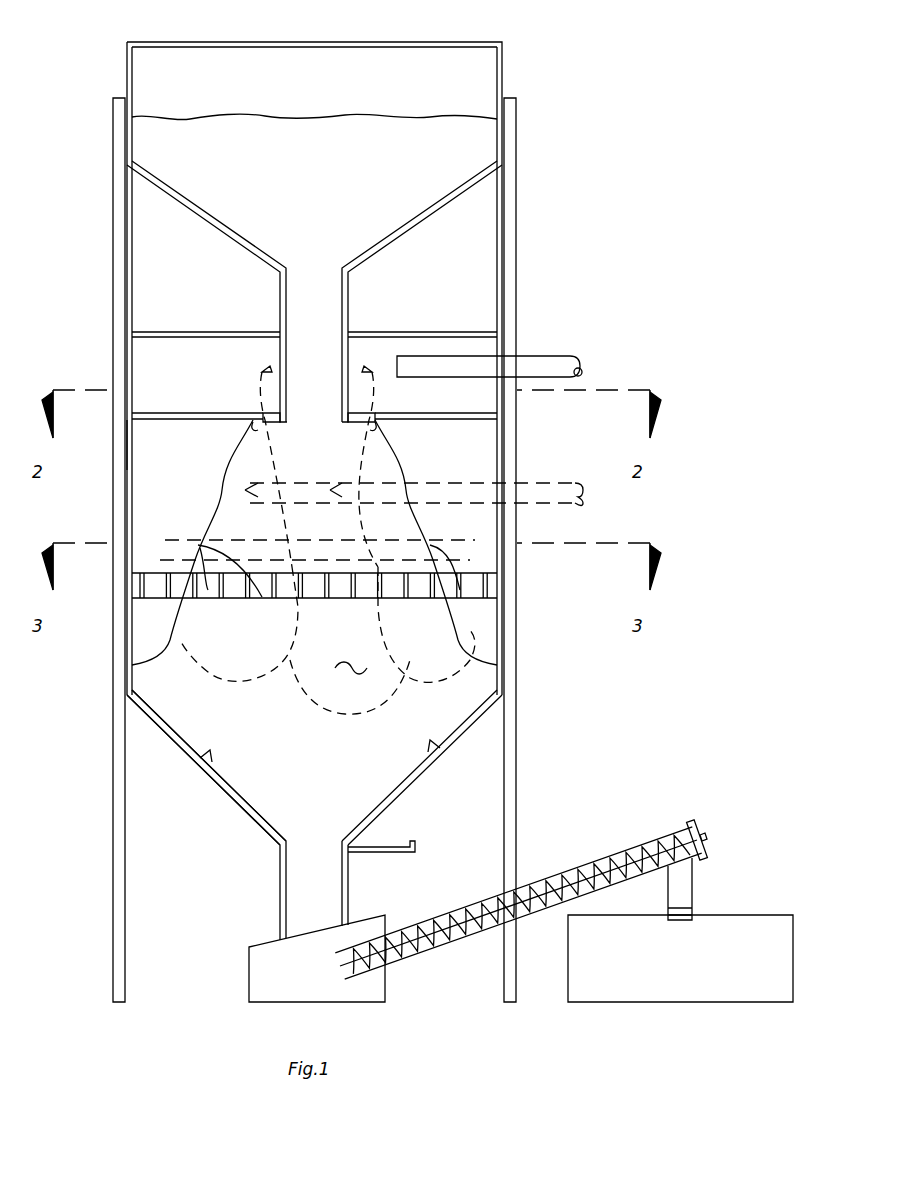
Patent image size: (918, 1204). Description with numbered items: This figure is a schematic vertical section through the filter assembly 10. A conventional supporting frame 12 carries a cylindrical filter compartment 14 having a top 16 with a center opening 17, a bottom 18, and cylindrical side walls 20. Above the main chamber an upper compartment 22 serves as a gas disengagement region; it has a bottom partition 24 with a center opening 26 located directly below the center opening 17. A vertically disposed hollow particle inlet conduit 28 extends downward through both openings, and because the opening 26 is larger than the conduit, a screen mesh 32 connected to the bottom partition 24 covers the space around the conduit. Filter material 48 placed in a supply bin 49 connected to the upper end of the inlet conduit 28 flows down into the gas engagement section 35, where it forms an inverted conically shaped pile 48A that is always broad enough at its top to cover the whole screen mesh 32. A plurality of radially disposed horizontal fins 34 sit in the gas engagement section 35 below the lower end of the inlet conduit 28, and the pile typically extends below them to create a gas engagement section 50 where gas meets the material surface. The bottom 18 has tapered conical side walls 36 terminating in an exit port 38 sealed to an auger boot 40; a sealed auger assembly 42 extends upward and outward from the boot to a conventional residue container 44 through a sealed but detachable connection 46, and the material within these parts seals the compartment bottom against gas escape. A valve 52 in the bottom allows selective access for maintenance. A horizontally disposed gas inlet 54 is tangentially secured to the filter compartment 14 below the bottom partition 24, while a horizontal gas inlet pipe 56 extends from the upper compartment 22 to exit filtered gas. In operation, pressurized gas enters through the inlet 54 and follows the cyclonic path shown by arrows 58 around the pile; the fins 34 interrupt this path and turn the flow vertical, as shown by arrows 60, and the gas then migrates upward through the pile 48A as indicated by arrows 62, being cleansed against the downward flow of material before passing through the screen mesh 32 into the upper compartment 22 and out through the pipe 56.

The filter assembly 10 is at (548, 124).
The supporting frame 12 is at (517, 757).
The filter compartment 14 is at (511, 444).
The top 16 is at (480, 330).
The center opening 17 is at (275, 326).
The bottom 18 is at (270, 825).
The cylindrical side walls 20 is at (135, 512).
The upper compartment 22 is at (216, 357).
The bottom partition 24 is at (160, 413).
The center opening 26 is at (263, 418).
The particle inlet conduit 28 is at (345, 350).
The screen mesh 32 is at (253, 422).
The radially disposed horizontal fins 34 is at (205, 546).
The gas engagement section 35 is at (149, 463).
The tapered bottom conical side walls 36 is at (205, 757).
The exit port 38 is at (286, 857).
The auger boot 40 is at (262, 945).
The sealed auger assembly 42 is at (645, 848).
The residue container 44 is at (765, 915).
The sealed detachable connection 46 is at (692, 905).
The filter material 48 is at (357, 130).
The inverted conically-shaped pile of filter material 48A is at (350, 658).
The supply bin 49 is at (504, 77).
The gas engagement section 50 is at (142, 633).
The valve 52 is at (395, 848).
The gas inlet 54 is at (540, 482).
The gas inlet pipe 56 is at (560, 357).
The arrows 58 is at (200, 520).
The arrows 60 is at (146, 611).
The arrows 62 is at (285, 460).